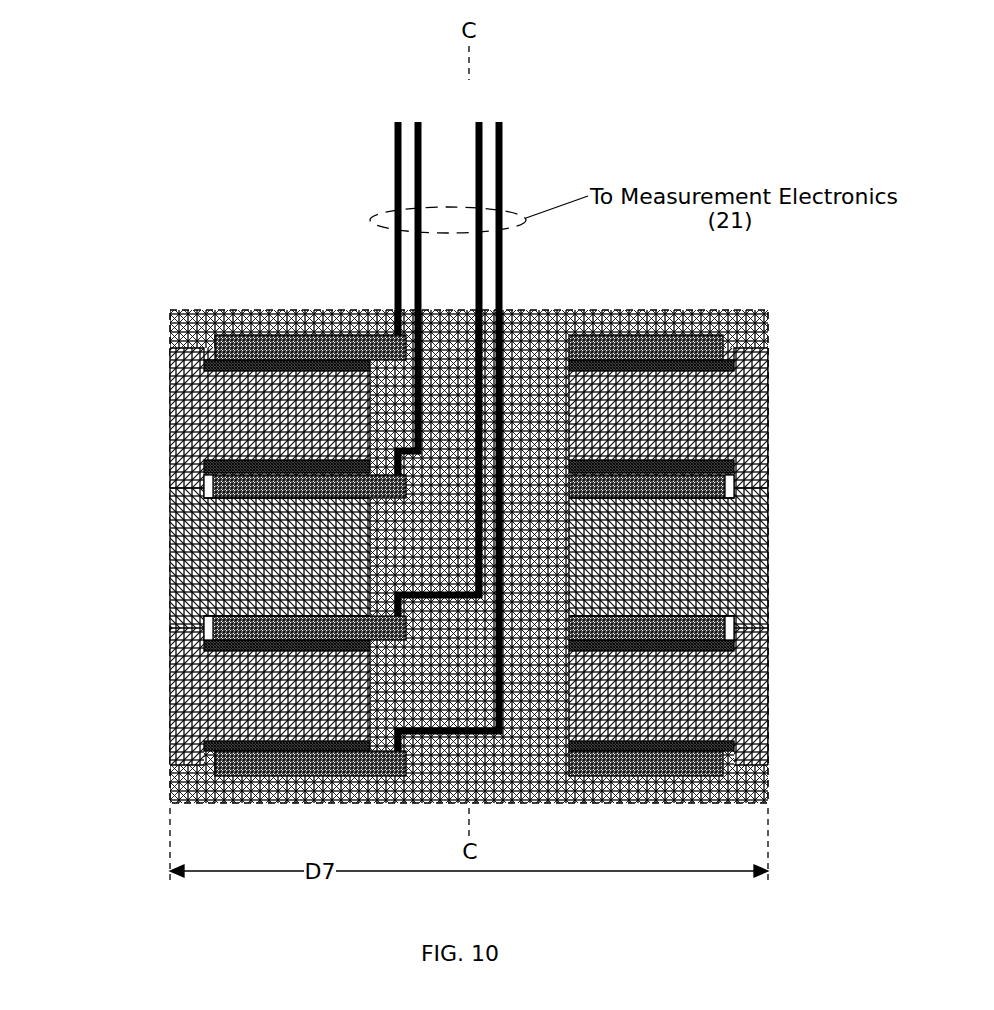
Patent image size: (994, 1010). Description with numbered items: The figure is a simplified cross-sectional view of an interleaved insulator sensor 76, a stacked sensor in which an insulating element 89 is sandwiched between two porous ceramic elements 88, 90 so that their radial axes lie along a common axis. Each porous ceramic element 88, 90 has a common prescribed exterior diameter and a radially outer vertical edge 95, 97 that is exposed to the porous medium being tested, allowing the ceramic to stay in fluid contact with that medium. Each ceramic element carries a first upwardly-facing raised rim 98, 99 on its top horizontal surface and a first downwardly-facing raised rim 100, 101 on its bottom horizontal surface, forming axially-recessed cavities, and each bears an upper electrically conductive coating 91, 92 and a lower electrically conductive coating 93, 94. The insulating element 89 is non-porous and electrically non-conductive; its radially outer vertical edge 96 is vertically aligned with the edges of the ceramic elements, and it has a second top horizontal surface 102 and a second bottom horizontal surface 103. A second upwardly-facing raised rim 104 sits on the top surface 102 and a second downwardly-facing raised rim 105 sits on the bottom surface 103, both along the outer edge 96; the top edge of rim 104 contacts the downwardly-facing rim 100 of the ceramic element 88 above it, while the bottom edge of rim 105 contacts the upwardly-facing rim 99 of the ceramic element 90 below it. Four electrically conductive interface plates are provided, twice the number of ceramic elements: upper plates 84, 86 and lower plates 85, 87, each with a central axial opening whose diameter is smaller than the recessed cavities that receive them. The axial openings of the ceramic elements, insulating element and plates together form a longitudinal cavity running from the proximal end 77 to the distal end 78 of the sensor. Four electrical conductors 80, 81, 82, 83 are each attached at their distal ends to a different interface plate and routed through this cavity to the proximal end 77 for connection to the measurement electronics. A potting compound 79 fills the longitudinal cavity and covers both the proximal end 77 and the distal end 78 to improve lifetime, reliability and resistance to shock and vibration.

The interleaved insulator sensor 76 is at (162, 225).
The proximal end 77 is at (752, 303).
The distal end 78 is at (274, 797).
The potting compound 79 is at (330, 305).
The electrical conductor 80 is at (390, 112).
The electrical conductor 81 is at (410, 112).
The electrical conductor 82 is at (471, 112).
The electrical conductor 83 is at (491, 112).
The upper interface plate 84 is at (238, 327).
The lower interface plate 85 is at (217, 450).
The upper interface plate 86 is at (220, 604).
The lower interface plate 87 is at (237, 742).
The porous ceramic element 88 is at (258, 417).
The insulating element 89 is at (258, 562).
The porous ceramic element 90 is at (258, 697).
The upper electrically conductive coating 91 is at (205, 364).
The upper electrically conductive coating 92 is at (208, 645).
The lower electrically conductive coating 93 is at (208, 455).
The lower electrically conductive coating 94 is at (207, 733).
The radially outer vertical edge 95 is at (158, 375).
The radially outer vertical edge 96 is at (158, 538).
The radially outer vertical edge 97 is at (158, 658).
The first upwardly-facing raised rim 98 is at (178, 345).
The first upwardly-facing raised rim 99 is at (177, 630).
The first downwardly-facing raised rim 100 is at (178, 473).
The first downwardly-facing raised rim 101 is at (180, 745).
The second top horizontal surface 102 is at (213, 510).
The second bottom horizontal surface 103 is at (217, 595).
The second upwardly-facing raised rim 104 is at (173, 490).
The second downwardly-facing raised rim 105 is at (177, 610).